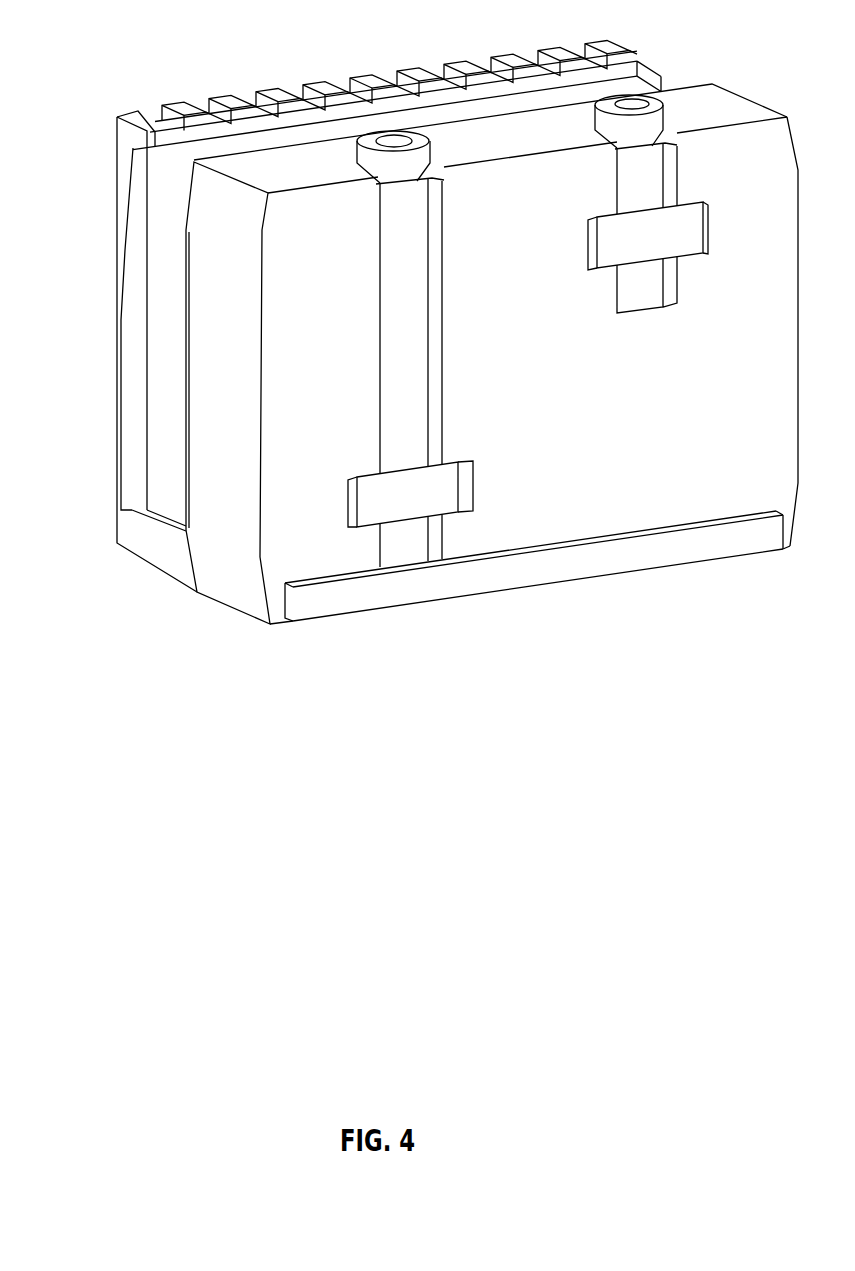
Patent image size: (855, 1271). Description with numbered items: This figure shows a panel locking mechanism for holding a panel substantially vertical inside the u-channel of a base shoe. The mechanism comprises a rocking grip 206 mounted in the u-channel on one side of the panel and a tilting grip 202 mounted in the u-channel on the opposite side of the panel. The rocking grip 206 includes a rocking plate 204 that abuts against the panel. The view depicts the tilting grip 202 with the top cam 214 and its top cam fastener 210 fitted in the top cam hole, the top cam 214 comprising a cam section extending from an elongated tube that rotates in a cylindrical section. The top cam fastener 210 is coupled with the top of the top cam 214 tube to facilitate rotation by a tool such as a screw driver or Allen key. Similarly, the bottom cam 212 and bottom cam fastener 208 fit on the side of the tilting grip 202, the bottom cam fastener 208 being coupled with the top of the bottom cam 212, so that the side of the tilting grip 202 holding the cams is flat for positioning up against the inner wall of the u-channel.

The tilting grip 202 is at (218, 581).
The rocking plate 204 is at (130, 290).
The rocking grip 206 is at (180, 110).
The bottom cam fastener 208 is at (398, 174).
The top cam fastener 210 is at (667, 118).
The bottom cam 212 is at (397, 560).
The top cam 214 is at (676, 242).